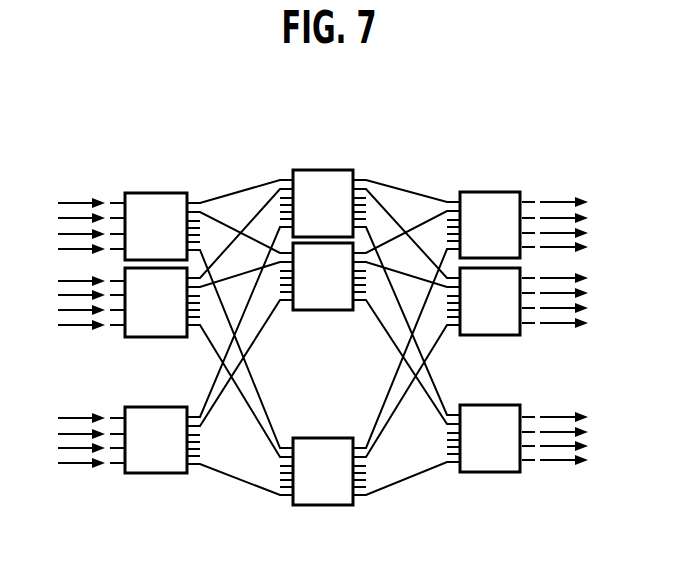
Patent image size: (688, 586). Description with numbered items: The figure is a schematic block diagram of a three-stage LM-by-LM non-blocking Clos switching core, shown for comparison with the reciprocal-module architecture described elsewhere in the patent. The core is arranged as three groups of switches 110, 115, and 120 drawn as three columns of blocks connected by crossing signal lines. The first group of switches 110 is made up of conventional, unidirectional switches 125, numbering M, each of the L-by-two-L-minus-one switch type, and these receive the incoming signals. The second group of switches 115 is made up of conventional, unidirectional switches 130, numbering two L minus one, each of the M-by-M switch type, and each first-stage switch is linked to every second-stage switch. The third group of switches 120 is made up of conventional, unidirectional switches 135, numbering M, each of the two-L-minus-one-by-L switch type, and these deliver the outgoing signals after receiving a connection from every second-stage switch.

The first group of switches 110 is at (166, 160).
The second group of switches 115 is at (329, 136).
The third group of switches 120 is at (490, 171).
The unidirectional switch 125 is at (127, 201).
The unidirectional switch 130 is at (355, 176).
The unidirectional switch 135 is at (515, 200).